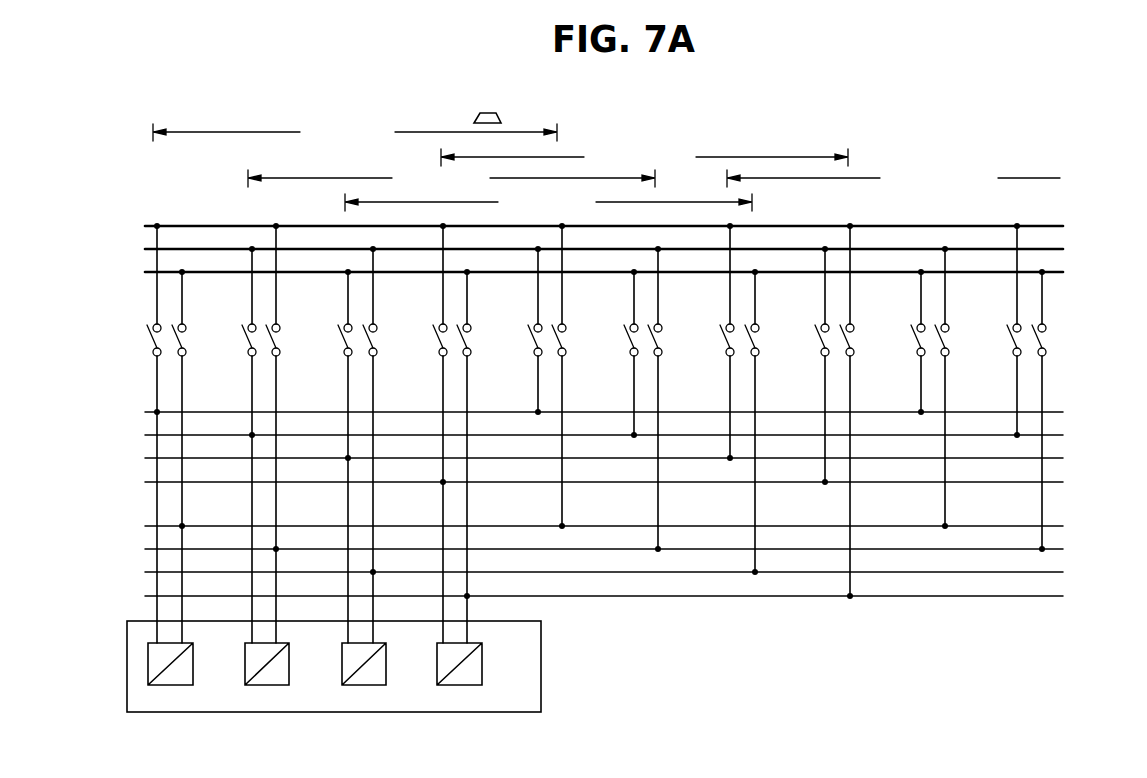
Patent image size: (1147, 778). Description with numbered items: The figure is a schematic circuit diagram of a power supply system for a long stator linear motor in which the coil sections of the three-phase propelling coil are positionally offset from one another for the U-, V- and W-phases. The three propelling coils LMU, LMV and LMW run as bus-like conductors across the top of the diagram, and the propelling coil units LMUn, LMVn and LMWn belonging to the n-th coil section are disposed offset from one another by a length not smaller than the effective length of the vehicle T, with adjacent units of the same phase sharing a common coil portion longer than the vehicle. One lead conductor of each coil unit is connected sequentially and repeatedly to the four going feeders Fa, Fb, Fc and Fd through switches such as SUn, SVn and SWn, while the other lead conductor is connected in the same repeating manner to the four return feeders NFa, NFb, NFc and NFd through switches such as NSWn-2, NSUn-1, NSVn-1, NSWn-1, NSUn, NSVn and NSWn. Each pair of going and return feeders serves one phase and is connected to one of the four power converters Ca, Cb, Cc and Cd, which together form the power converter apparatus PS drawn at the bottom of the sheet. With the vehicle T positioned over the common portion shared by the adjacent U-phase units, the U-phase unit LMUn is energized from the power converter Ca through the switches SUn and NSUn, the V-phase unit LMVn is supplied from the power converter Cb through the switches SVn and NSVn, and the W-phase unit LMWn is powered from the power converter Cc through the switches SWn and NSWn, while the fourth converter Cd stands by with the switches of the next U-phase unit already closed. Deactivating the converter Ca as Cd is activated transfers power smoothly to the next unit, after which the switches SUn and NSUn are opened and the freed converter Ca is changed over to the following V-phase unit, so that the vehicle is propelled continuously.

The vehicle T is at (475, 117).
The U-phase propelling coil LMU is at (144, 227).
The V-phase propelling coil LMV is at (144, 250).
The W-phase propelling coil LMW is at (144, 273).
The U-phase propelling coil unit of the n-th section LMUn is at (355, 133).
The V-phase propelling coil unit of the n-th section LMVn is at (451, 180).
The W-phase propelling coil unit of the n-th section LMWn is at (548, 203).
The switch SUn is at (151, 338).
The switch SVn is at (246, 342).
The switch SWn is at (342, 340).
The switch NSWn-2 is at (189, 337).
The switch NSUn-1 is at (283, 337).
The switch NSVn-1 is at (380, 337).
The switch NSWn-1 is at (474, 337).
The switch NSUn is at (569, 337).
The switch NSVn is at (665, 337).
The switch NSWn is at (762, 337).
The going feeder Fa is at (577, 411).
The going feeder Fb is at (577, 435).
The going feeder Fc is at (577, 462).
The going feeder Fd is at (577, 487).
The return feeder NFa is at (568, 527).
The return feeder NFb is at (568, 551).
The return feeder NFc is at (568, 575).
The return feeder NFd is at (568, 600).
The power converter Ca is at (193, 661).
The power converter Cb is at (289, 661).
The power converter Cc is at (386, 661).
The power converter Cd is at (482, 661).
The power converter apparatus PS is at (541, 688).